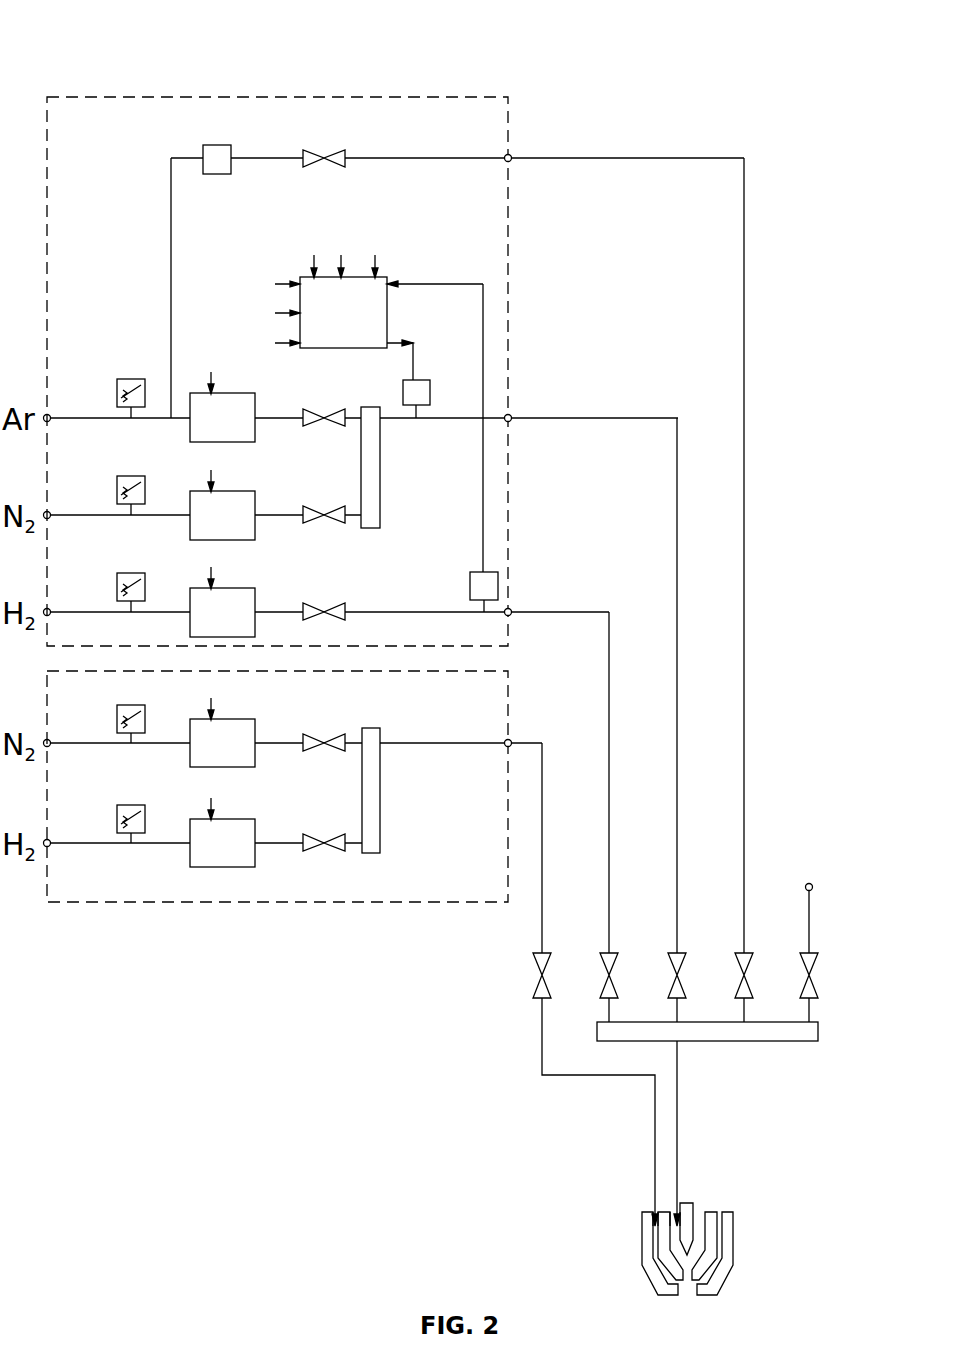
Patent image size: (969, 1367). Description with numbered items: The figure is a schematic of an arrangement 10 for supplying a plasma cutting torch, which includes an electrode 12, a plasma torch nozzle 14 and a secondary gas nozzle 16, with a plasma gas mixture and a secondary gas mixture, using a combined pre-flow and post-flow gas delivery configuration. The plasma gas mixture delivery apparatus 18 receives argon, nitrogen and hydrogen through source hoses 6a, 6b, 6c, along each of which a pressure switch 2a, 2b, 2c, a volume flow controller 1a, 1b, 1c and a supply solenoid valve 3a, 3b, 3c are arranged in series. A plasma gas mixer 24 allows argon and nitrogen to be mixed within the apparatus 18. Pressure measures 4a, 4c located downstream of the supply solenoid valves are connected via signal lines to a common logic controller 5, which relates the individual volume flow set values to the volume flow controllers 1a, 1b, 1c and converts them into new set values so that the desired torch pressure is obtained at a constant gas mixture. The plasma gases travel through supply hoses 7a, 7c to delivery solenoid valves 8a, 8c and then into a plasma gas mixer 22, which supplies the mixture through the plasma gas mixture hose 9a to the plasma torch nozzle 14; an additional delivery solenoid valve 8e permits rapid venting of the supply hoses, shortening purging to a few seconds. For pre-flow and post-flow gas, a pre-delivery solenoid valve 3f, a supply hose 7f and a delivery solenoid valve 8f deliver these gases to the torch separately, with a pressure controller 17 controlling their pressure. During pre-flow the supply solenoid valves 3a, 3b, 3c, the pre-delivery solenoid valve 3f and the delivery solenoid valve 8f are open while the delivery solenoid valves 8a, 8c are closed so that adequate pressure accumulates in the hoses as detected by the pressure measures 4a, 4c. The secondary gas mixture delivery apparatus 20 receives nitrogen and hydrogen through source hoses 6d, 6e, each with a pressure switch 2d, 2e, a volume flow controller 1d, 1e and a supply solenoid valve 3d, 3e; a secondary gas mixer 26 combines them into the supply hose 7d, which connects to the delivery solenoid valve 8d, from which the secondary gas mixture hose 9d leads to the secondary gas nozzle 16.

The arrangement 10 is at (306, 52).
The plasma gas mixture delivery apparatus 18 is at (408, 97).
The secondary gas mixture delivery apparatus 20 is at (138, 905).
The pressure controller 17 is at (205, 145).
The pre-delivery solenoid valve 3f is at (316, 150).
The logic controller 5 is at (390, 278).
The pressure measure 4a is at (404, 380).
The pressure measure 4c is at (471, 572).
The volume flow controller 1a is at (253, 393).
The volume flow controller 1b is at (253, 491).
The volume flow controller 1c is at (253, 588).
The volume flow controller 1d is at (253, 719).
The volume flow controller 1e is at (253, 819).
The pressure switch 2a is at (131, 380).
The pressure switch 2b is at (131, 477).
The pressure switch 2c is at (131, 574).
The pressure switch 2d is at (131, 706).
The pressure switch 2e is at (131, 806).
The source hose 6a is at (67, 418).
The source hose 6b is at (67, 515).
The source hose 6c is at (67, 612).
The source hose 6d is at (67, 743).
The source hose 6e is at (67, 843).
The supply solenoid valve 3a is at (315, 412).
The supply solenoid valve 3b is at (315, 509).
The supply solenoid valve 3c is at (315, 606).
The supply solenoid valve 3d is at (315, 738).
The supply solenoid valve 3e is at (315, 838).
The plasma gas mixer 24 is at (381, 491).
The secondary gas mixer 26 is at (381, 803).
The supply hose 7a is at (678, 840).
The supply hose 7c is at (610, 840).
The supply hose 7d is at (544, 840).
The supply hose 7f is at (745, 840).
The delivery solenoid valve 8a is at (684, 955).
The delivery solenoid valve 8c is at (616, 955).
The delivery solenoid valve 8d is at (549, 955).
The delivery solenoid valve 8e is at (816, 955).
The delivery solenoid valve 8f is at (751, 955).
The plasma gas mixer 22 is at (818, 1031).
The plasma gas mixture hose 9a is at (676, 1203).
The secondary gas mixture hose 9d is at (655, 1190).
The electrode 12 is at (690, 1200).
The plasma torch nozzle 14 is at (712, 1208).
The secondary gas nozzle 16 is at (728, 1212).